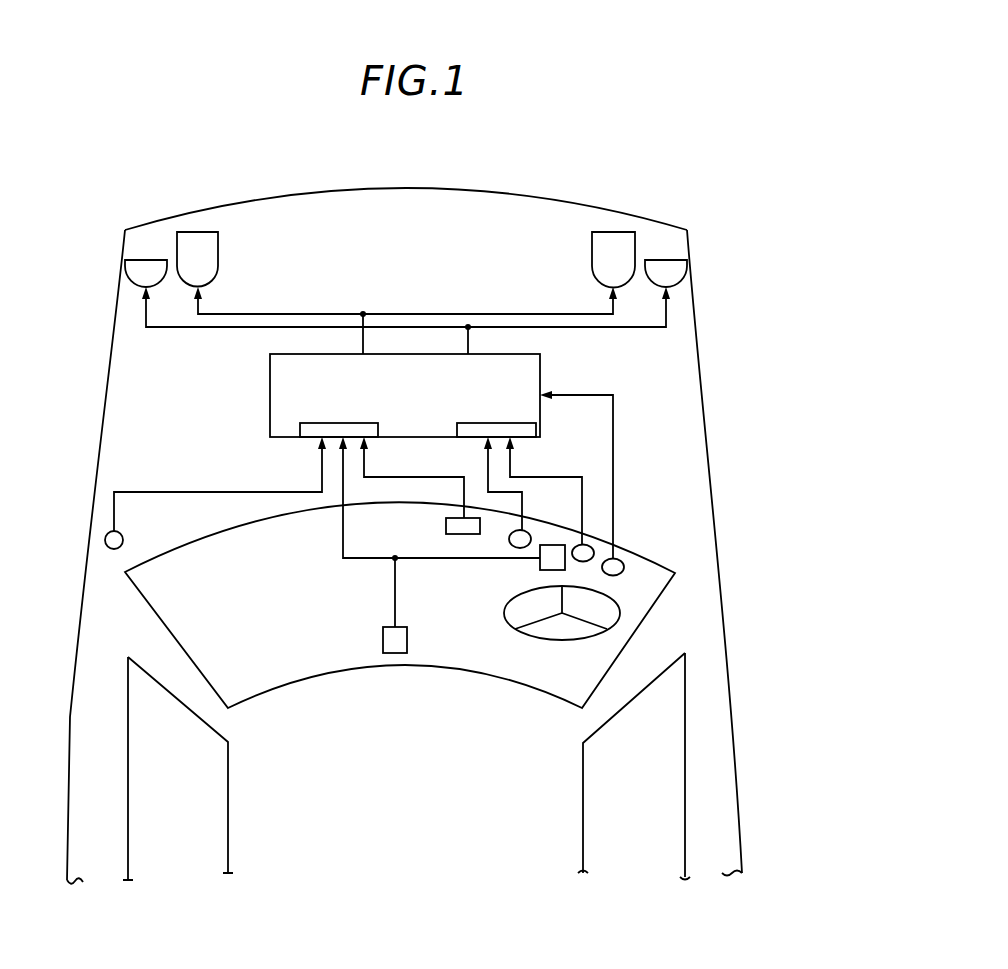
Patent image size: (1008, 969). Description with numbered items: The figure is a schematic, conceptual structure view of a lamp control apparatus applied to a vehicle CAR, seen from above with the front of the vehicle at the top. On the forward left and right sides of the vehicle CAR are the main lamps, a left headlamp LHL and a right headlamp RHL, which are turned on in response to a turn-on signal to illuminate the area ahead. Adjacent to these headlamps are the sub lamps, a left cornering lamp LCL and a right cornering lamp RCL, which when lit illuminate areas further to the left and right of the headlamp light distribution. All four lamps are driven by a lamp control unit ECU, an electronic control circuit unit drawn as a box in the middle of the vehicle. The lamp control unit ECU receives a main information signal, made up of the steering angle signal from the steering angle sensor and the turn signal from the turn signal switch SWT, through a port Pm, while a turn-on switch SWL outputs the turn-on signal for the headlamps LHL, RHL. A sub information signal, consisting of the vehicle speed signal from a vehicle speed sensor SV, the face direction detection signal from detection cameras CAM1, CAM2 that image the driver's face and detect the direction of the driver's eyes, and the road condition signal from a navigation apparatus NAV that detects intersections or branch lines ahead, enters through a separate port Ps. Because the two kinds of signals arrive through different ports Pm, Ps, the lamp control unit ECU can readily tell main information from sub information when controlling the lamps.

The vehicle CAR is at (397, 842).
The left cornering lamp LCL is at (147, 260).
The left headlamp LHL is at (203, 232).
The right headlamp RHL is at (607, 232).
The right cornering lamp RCL is at (676, 260).
The lamp control unit ECU is at (270, 395).
The port Ps is at (353, 421).
The port Pm is at (511, 421).
The vehicle speed sensor SV is at (124, 545).
The navigation apparatus NAV is at (446, 530).
The detection camera CAM1 is at (540, 563).
The detection camera CAM2 is at (395, 653).
The turn-on switch SWL is at (633, 555).
The turn signal switch SWT is at (590, 560).